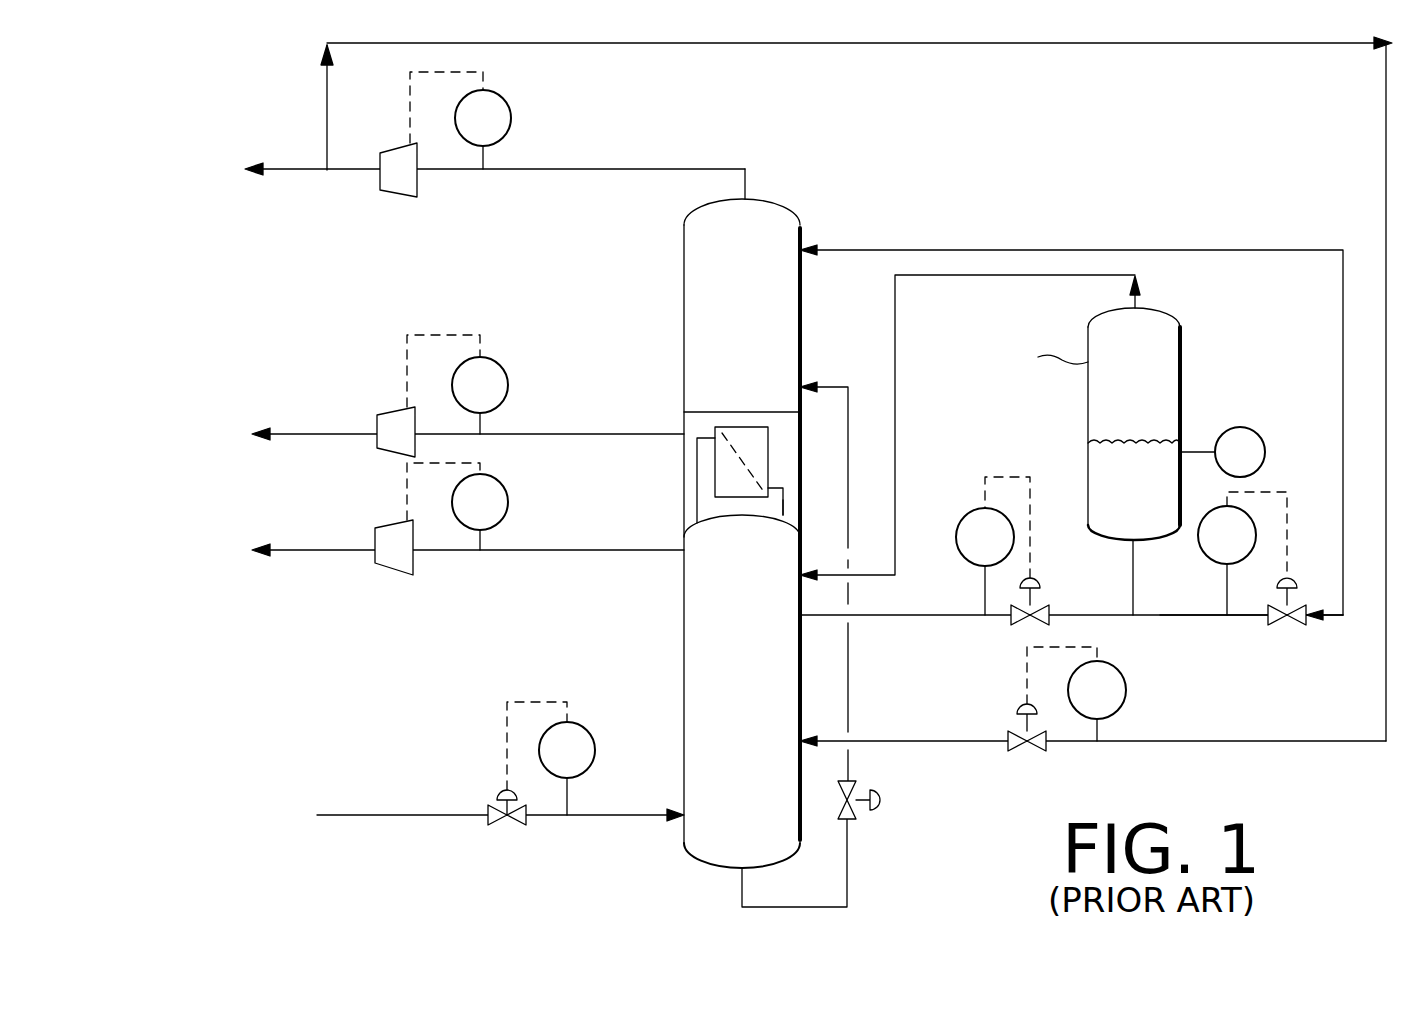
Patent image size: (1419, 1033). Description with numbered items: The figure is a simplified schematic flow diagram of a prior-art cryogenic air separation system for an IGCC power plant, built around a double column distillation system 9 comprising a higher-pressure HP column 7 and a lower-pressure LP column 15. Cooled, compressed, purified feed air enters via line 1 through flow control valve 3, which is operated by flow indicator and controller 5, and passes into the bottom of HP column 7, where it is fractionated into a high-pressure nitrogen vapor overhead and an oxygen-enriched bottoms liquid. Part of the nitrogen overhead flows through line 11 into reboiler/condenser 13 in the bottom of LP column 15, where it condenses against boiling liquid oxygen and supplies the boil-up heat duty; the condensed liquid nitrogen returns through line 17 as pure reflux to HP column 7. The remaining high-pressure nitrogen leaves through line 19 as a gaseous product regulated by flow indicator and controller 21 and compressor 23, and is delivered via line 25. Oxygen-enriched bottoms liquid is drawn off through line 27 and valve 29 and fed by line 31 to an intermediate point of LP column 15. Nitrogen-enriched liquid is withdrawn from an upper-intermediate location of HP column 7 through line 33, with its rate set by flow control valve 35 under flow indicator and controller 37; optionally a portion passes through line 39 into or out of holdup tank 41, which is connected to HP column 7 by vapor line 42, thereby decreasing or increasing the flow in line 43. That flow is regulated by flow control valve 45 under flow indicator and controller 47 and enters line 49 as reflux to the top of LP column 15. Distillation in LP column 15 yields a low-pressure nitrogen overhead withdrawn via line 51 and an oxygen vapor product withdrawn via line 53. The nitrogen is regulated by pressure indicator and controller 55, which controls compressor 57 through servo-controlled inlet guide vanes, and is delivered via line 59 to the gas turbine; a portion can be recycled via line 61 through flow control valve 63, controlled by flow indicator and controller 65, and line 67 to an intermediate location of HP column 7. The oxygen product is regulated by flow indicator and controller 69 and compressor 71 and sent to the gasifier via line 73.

The feed air line 1 is at (406, 815).
The flow control valve 3 is at (498, 786).
The flow indicator and controller 5 is at (590, 740).
The higher-pressure distillation column 7 is at (684, 836).
The double column distillation system 9 is at (786, 186).
The line 11 is at (697, 470).
The reboiler/condenser 13 is at (740, 427).
The lower-pressure distillation column 15 is at (684, 290).
The line 17 is at (785, 505).
The line 19 is at (580, 550).
The flow indicator and controller 21 is at (508, 490).
The compressor 23 is at (392, 577).
The line 25 is at (326, 550).
The line 27 is at (847, 866).
The valve 29 is at (884, 796).
The line 31 is at (834, 387).
The line 33 is at (910, 615).
The flow control valve 35 is at (1040, 580).
The flow indicator and controller 37 is at (958, 526).
The line 39 is at (1133, 575).
The holdup tank 41 is at (1180, 357).
The vapor line 42 is at (895, 275).
The line 43 is at (1185, 615).
The flow control valve 45 is at (1290, 628).
The flow indicator and controller 47 is at (1206, 558).
The line 49 is at (1343, 322).
The line 51 is at (598, 169).
The line 53 is at (608, 434).
The pressure indicator and controller 55 is at (512, 118).
The compressor 57 is at (396, 196).
The line 59 is at (298, 172).
The line 61 is at (745, 43).
The flow control valve 63 is at (1022, 704).
The flow indicator and controller 65 is at (1127, 690).
The line 67 is at (930, 741).
The flow indicator and controller 69 is at (505, 368).
The compressor 71 is at (377, 405).
The line 73 is at (302, 434).